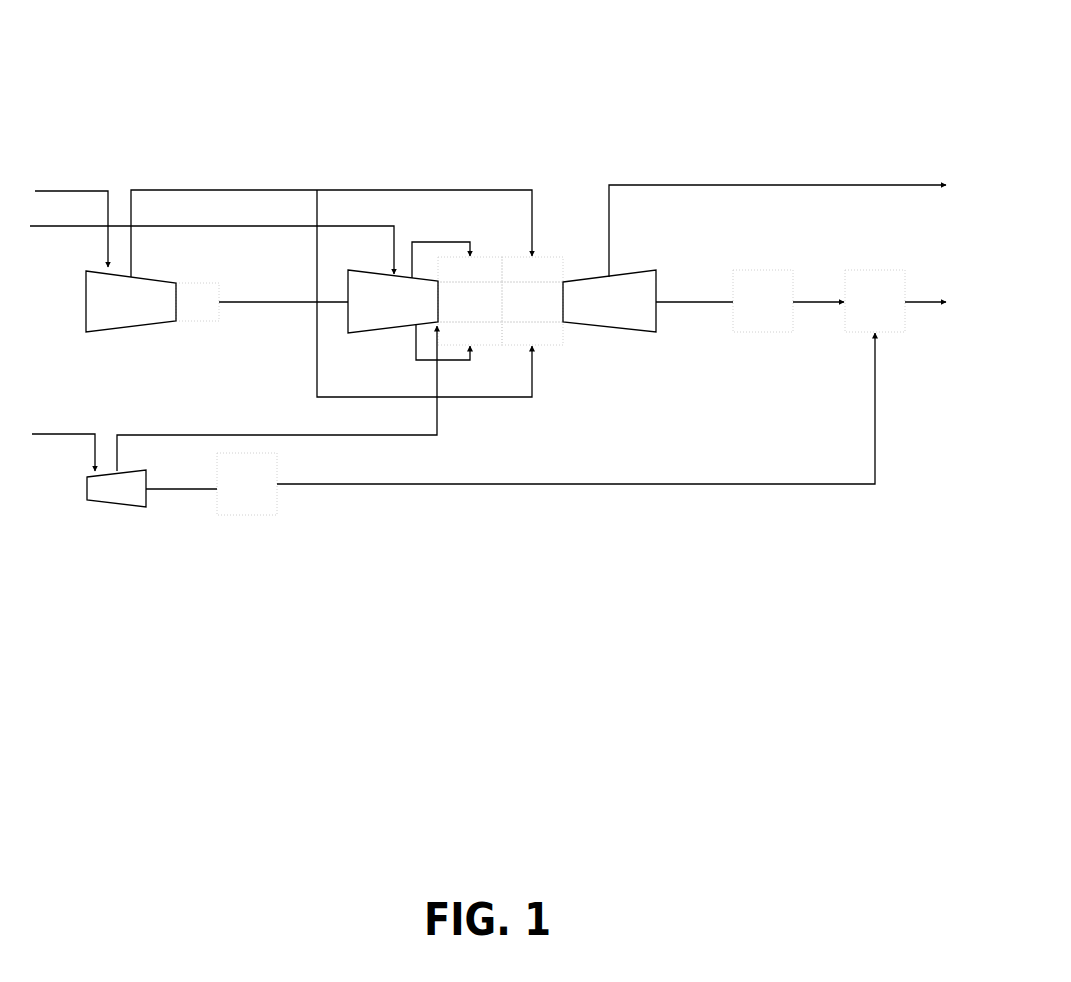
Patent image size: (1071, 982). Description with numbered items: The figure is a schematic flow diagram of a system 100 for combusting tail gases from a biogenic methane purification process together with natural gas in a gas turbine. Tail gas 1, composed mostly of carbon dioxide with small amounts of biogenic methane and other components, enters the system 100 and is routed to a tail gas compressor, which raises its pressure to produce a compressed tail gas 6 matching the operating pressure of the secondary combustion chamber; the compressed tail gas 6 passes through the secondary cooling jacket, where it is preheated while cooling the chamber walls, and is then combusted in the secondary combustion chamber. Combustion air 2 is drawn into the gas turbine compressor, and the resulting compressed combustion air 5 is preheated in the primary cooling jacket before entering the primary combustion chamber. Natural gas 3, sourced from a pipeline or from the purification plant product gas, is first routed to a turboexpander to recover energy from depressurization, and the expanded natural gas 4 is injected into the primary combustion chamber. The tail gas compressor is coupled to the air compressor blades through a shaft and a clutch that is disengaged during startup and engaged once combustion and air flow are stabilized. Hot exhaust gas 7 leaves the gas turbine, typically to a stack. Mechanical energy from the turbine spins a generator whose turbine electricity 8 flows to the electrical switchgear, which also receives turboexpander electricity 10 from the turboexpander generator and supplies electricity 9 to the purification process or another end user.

The system 100 is at (712, 103).
The tail gas 1 is at (71, 218).
The combustion air 2 is at (212, 250).
The natural gas 3 is at (63, 452).
The expanded natural gas 4 is at (277, 398).
The compressed combustion air 5 is at (431, 298).
The compressed tail gas 6 is at (556, 286).
The exhaust gas 7 is at (777, 231).
The turbine electricity 8 is at (818, 292).
The electricity to end user 9 is at (925, 292).
The turboexpander electricity 10 is at (592, 408).